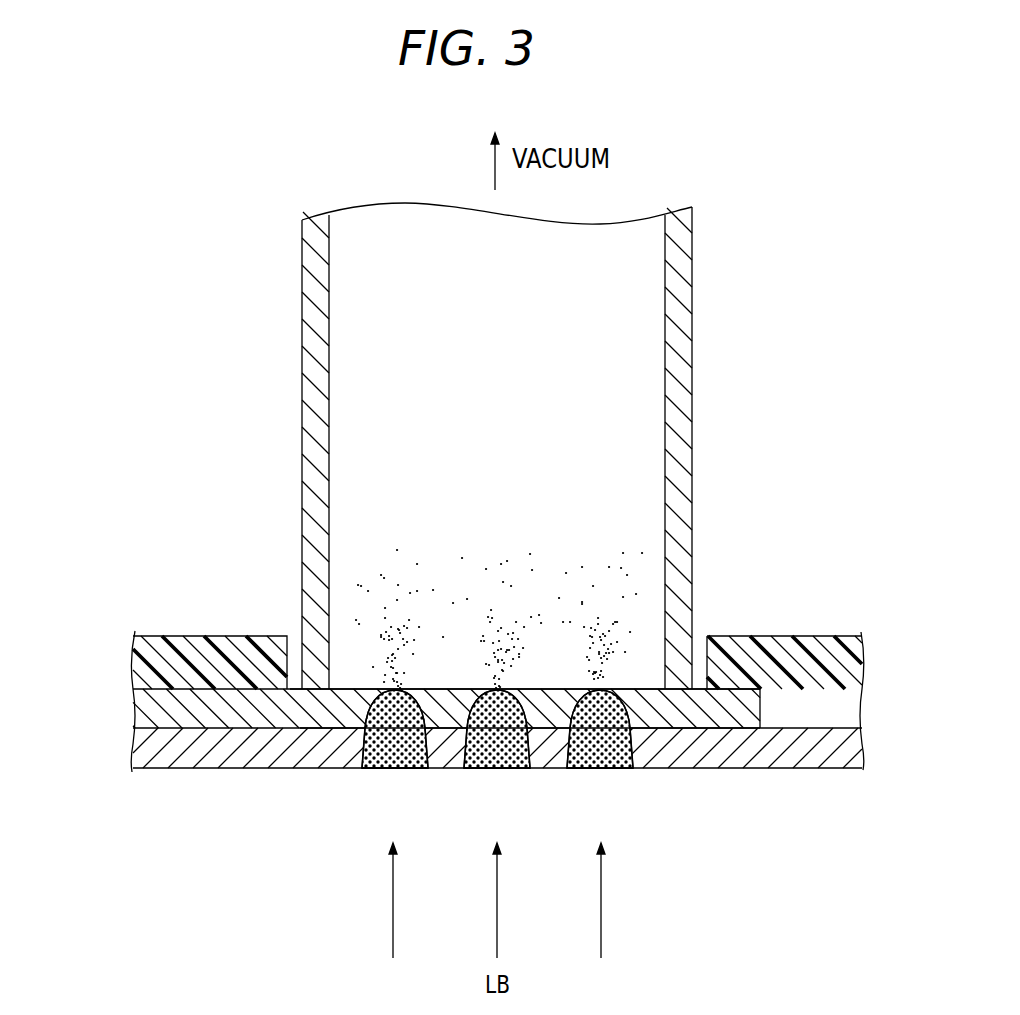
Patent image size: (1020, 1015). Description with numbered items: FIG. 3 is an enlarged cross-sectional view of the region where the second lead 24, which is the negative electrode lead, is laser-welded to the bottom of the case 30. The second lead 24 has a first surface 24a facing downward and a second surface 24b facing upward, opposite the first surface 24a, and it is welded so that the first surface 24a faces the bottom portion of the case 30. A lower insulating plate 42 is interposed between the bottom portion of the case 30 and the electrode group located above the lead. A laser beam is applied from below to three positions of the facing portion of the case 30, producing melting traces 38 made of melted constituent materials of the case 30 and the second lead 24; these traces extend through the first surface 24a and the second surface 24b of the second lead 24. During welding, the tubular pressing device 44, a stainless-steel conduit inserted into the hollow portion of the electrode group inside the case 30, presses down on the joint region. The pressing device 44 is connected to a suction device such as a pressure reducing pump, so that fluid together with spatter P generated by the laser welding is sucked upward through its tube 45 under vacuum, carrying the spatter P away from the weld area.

The pressing device 44 is at (287, 328).
The tube 45 is at (680, 270).
The spatter P is at (633, 590).
The lower insulating plate 42 is at (140, 675).
The second lead 24 is at (140, 715).
The first surface 24a is at (295, 732).
The second surface 24b is at (290, 686).
The case 30 is at (140, 753).
The melting traces 38 is at (393, 732).